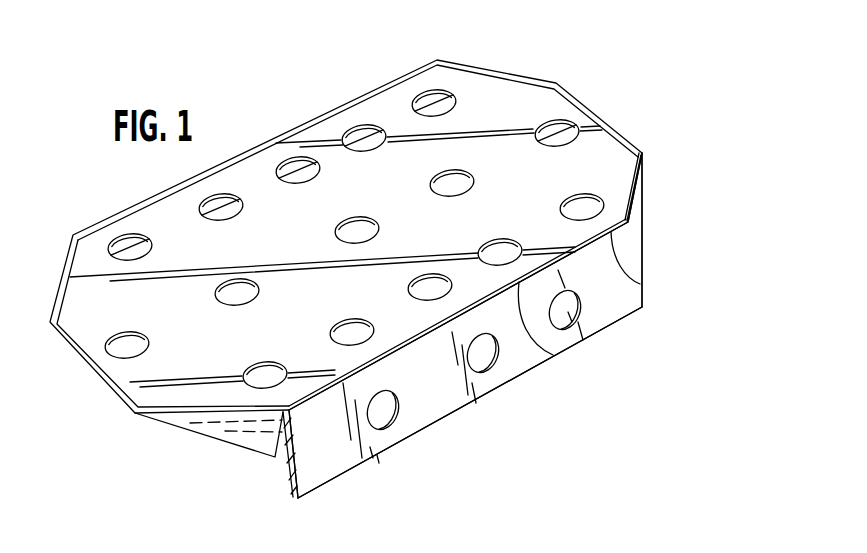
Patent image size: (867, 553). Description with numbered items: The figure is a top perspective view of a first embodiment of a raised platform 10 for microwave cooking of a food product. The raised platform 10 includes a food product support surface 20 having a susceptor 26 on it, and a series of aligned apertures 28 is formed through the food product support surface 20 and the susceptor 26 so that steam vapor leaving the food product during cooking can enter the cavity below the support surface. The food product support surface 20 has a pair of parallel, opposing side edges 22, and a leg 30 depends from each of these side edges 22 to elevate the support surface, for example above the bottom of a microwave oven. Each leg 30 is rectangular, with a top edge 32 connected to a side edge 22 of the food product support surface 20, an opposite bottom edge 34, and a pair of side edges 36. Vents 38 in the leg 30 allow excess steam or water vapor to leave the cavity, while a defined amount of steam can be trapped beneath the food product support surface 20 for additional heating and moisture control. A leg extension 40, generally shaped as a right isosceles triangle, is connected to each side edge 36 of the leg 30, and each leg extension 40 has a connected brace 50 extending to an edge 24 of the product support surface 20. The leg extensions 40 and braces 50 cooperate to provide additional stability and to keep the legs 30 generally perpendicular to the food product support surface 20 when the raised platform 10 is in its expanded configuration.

The raised platform 10 is at (570, 72).
The food product support surface 20 is at (644, 170).
The side edges 22 is at (642, 285).
The edge 24 is at (645, 195).
The susceptor 26 is at (587, 163).
The apertures 28 is at (453, 171).
The leg 30 is at (523, 360).
The top edge 32 is at (553, 355).
The bottom edge 34 is at (622, 323).
The side edges 36 is at (641, 262).
The vents 38 is at (397, 398).
The leg extensions 40 is at (287, 460).
The brace 50 is at (240, 430).